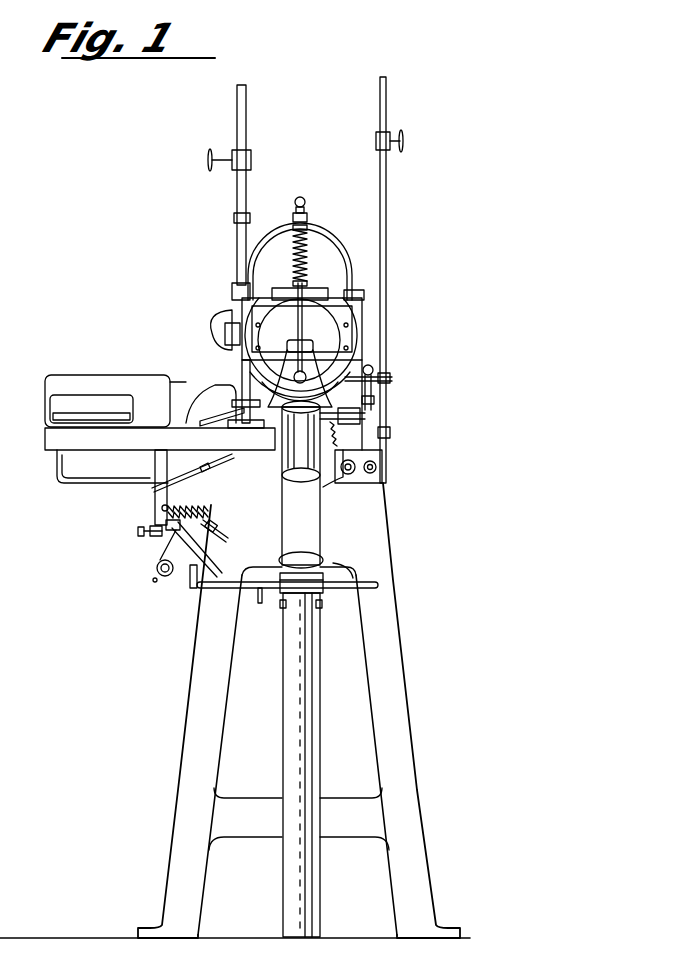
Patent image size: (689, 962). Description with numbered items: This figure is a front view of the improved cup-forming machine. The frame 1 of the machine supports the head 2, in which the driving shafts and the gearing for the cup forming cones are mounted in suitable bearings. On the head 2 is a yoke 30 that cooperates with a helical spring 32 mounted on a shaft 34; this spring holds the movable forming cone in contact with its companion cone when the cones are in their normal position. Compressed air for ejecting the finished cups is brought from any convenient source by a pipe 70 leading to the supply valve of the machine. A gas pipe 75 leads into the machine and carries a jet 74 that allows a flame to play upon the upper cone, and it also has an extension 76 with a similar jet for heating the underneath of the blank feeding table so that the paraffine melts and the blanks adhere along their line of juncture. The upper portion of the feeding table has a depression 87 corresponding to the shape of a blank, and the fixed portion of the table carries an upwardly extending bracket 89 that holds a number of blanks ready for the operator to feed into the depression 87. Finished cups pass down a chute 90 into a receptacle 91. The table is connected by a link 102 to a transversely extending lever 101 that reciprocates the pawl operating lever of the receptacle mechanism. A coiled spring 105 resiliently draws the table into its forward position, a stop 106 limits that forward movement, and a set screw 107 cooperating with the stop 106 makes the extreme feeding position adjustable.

The frame 1 is at (378, 566).
The head 2 is at (356, 302).
The yoke 30 is at (318, 224).
The helical spring 32 is at (295, 263).
The shaft 34 is at (295, 205).
The pipe 70 is at (246, 124).
The jet 74 is at (386, 392).
The gas pipe 75 is at (387, 279).
The extension 76 is at (198, 473).
The depression 87 is at (203, 400).
The bracket 89 is at (92, 382).
The chute 90 is at (325, 518).
The receptacle 91 is at (307, 714).
The transversely extending lever 101 is at (261, 592).
The link 102 is at (192, 578).
The coiled spring 105 is at (163, 509).
The stop 106 is at (172, 535).
The set screw 107 is at (137, 534).